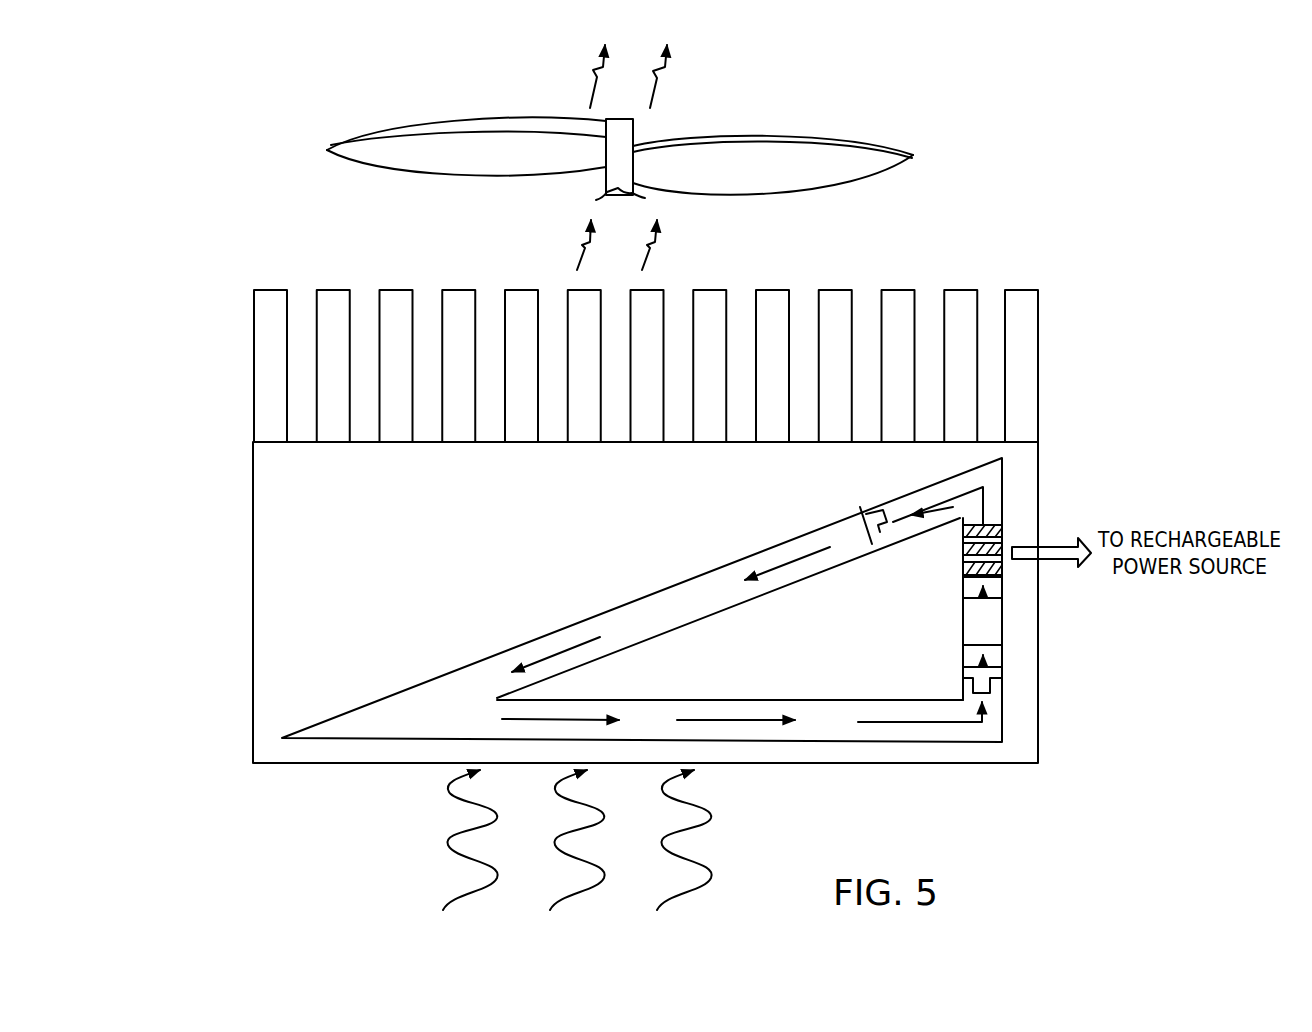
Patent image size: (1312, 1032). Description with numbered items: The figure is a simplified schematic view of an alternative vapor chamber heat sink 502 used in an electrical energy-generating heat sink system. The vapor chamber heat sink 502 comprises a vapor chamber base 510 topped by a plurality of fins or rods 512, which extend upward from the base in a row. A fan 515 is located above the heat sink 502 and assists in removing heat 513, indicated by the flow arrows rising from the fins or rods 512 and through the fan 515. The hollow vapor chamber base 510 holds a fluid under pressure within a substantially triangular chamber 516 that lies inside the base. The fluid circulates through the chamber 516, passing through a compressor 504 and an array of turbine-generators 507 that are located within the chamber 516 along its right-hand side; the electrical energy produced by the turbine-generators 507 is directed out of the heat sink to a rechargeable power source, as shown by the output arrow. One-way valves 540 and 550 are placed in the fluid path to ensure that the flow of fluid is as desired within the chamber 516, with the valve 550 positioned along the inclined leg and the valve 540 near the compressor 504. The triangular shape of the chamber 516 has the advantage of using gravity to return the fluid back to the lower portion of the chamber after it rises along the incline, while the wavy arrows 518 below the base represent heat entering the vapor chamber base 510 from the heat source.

The vapor chamber heat sink 502 is at (1052, 237).
The compressor 504 is at (963, 616).
The array of turbine-generators 507 is at (958, 526).
The vapor chamber base 510 is at (238, 763).
The fins or rods 512 is at (1040, 286).
The heat 513 is at (589, 83).
The fan 515 is at (797, 136).
The triangular chamber 516 is at (843, 699).
The heat input 518 is at (711, 822).
The one-way valve 540 is at (974, 675).
The one-way valve 550 is at (868, 512).